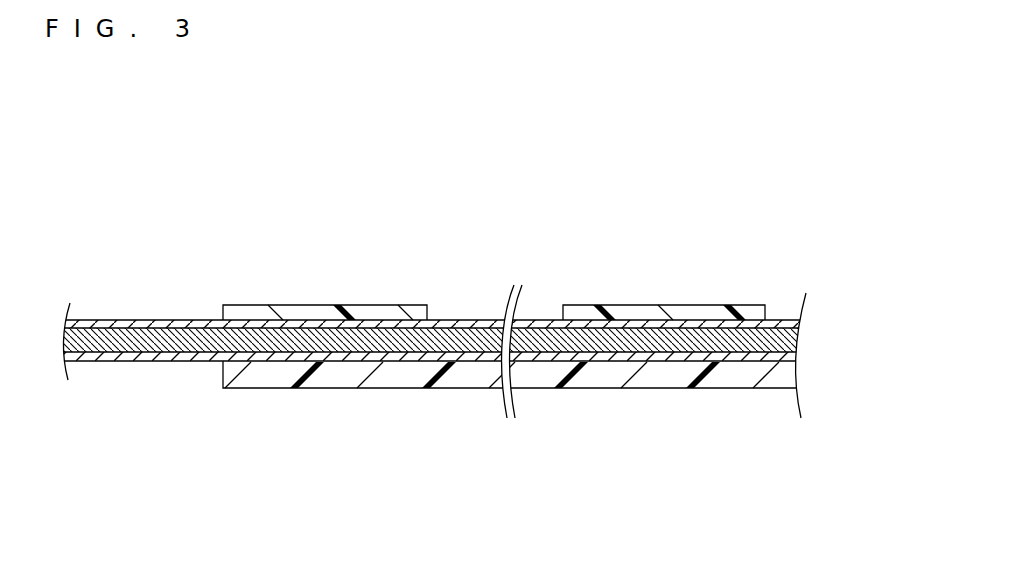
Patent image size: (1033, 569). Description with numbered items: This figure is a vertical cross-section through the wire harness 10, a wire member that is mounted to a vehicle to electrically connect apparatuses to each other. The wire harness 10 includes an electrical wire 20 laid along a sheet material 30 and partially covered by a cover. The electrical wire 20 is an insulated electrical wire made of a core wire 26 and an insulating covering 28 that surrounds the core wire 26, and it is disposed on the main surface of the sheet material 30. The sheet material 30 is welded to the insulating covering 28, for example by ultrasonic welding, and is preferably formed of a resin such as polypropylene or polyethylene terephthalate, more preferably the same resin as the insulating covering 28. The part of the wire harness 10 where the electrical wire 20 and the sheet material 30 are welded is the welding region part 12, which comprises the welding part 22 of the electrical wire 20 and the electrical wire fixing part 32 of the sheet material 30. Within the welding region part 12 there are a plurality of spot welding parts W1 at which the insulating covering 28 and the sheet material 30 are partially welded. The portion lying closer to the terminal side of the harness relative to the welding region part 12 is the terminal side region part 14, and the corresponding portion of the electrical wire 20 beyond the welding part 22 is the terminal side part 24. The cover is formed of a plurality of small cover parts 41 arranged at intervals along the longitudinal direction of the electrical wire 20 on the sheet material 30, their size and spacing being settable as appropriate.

The wire harness 10 is at (203, 155).
The welding region part 12 is at (424, 465).
The terminal side region part 14 is at (84, 438).
The electrical wire 20 is at (170, 264).
The welding part 22 is at (463, 320).
The terminal side part 24 is at (125, 363).
The core wire 26 is at (120, 327).
The insulating covering 28 is at (146, 334).
The sheet material 30 is at (620, 386).
The electrical wire fixing part 32 is at (465, 389).
The small cover part 41 is at (343, 305).
The spot welding part W1 is at (263, 392).